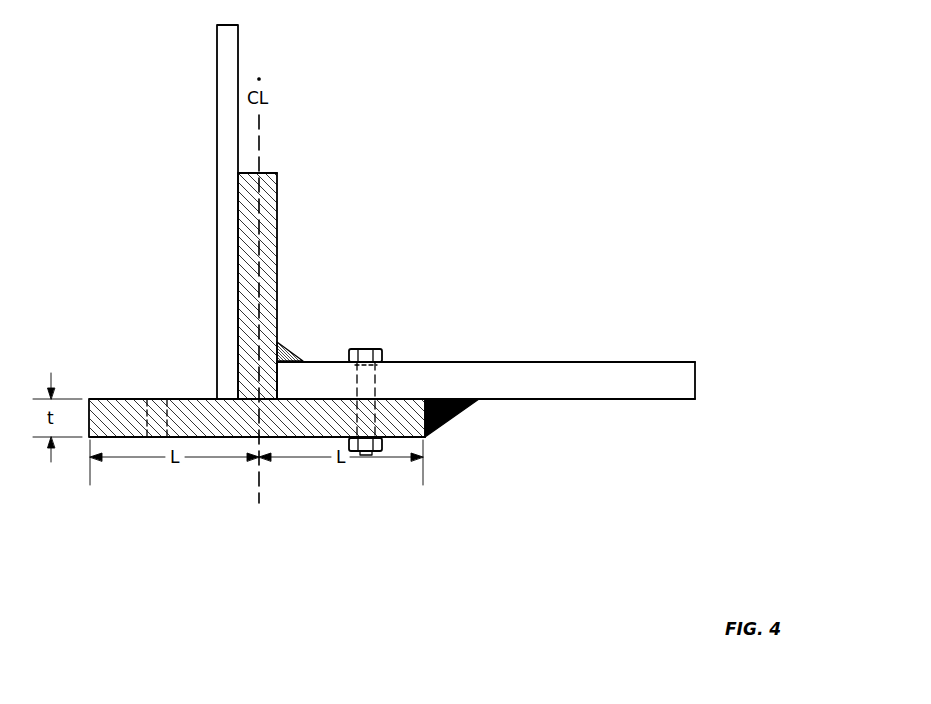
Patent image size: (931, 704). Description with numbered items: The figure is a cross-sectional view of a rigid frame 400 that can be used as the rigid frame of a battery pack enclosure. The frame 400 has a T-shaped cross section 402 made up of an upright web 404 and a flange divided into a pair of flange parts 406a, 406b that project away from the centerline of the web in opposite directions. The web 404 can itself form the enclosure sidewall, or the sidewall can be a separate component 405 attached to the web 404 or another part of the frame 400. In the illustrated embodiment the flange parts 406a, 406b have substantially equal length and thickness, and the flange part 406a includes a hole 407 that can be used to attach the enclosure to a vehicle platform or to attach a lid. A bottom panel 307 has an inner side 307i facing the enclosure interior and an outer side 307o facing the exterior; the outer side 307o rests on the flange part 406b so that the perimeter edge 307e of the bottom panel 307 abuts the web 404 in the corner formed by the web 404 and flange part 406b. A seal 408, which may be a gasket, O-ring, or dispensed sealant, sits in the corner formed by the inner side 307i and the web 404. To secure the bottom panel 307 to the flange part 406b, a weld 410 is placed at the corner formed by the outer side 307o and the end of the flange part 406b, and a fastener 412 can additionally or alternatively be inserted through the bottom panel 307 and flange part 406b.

The rigid frame 400 is at (137, 128).
The separate component 405 is at (222, 174).
The T-shaped cross section 402 is at (282, 169).
The web 404 is at (268, 200).
The seal 408 is at (288, 344).
The perimeter edge 307e is at (280, 382).
The fastener 412 is at (367, 349).
The inner side 307i is at (668, 362).
The bottom panel 307 is at (676, 377).
The outer side 307o is at (678, 399).
The weld 410 is at (450, 420).
The flange part 406a is at (105, 420).
The flange part 406b is at (390, 422).
The hole 407 is at (156, 410).